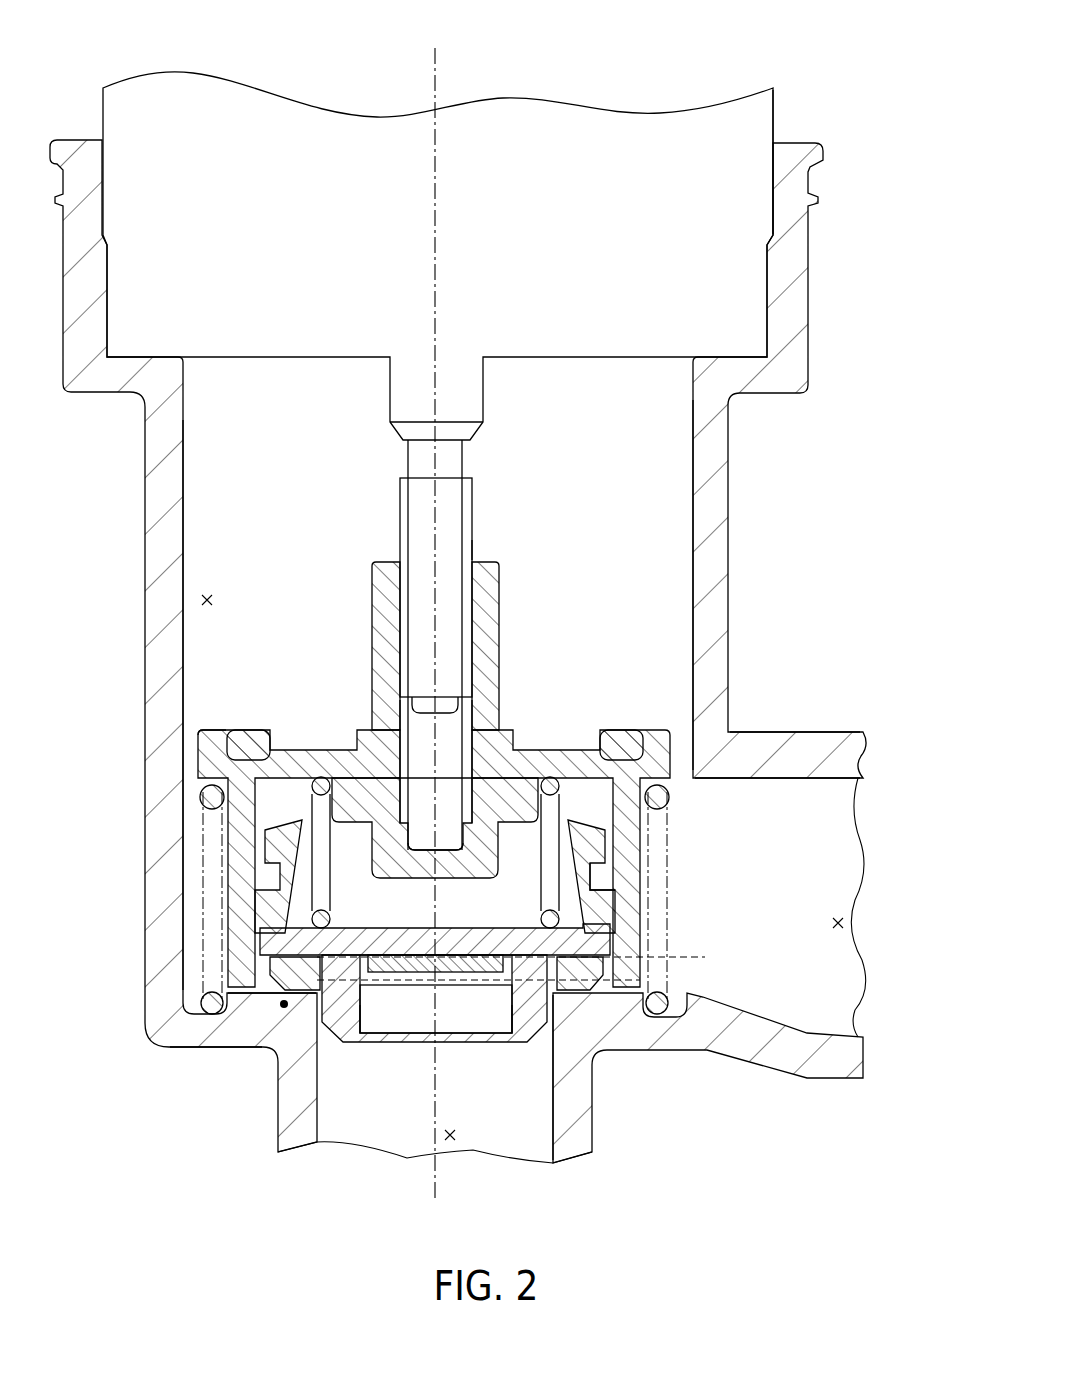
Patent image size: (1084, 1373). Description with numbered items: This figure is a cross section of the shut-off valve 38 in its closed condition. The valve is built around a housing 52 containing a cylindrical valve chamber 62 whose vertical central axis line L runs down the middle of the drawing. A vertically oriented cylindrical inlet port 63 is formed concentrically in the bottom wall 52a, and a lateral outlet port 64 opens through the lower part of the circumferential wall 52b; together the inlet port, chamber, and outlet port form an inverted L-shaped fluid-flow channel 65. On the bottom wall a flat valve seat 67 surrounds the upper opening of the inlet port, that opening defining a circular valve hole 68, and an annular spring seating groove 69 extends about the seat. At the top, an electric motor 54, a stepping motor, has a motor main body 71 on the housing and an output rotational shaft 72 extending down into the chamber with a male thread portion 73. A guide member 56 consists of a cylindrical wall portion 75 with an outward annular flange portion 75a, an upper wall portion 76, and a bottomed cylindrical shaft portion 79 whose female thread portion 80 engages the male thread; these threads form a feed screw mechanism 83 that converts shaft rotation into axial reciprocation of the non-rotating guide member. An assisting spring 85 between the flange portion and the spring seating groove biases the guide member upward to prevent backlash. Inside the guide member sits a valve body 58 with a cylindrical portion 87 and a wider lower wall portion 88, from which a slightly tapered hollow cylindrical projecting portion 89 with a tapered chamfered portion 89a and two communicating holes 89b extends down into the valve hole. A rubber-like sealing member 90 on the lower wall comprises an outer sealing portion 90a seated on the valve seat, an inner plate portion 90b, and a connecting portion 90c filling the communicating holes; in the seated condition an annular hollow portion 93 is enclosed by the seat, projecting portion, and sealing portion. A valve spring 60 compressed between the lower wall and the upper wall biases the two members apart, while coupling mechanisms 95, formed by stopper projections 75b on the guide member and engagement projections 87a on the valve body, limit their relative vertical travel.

The central axis line L is at (437, 607).
The shut-off valve 38 is at (857, 142).
The housing 52 is at (814, 319).
The bottom wall 52a is at (594, 1023).
The circumferential wall 52b is at (713, 548).
The electric motor 54 is at (779, 108).
The guide member 56 is at (313, 746).
The valve body 58 is at (264, 964).
The valve spring 60 is at (550, 778).
The valve chamber 62 is at (200, 600).
The inlet port 63 is at (450, 1140).
The outlet port 64 is at (838, 923).
The fluid-flow channel 65 is at (734, 793).
The valve seat 67 is at (283, 1005).
The valve hole 68 is at (320, 1023).
The spring seating groove 69 is at (192, 999).
The motor main body 71 is at (548, 130).
The output rotational shaft 72 is at (420, 458).
The male thread portion 73 is at (473, 500).
The cylindrical wall portion 75 is at (242, 843).
The annular flange portion 75a is at (200, 752).
The stopper projections 75b is at (604, 880).
The upper wall portion 76 is at (270, 758).
The cylindrical shaft portion 79 is at (487, 613).
The female thread portion 80 is at (402, 594).
The feed screw mechanism 83 is at (479, 553).
The assisting spring 85 is at (200, 795).
The cylindrical portion 87 is at (279, 918).
The engagement projections 87a is at (603, 848).
The lower wall portion 88 is at (440, 942).
The hollow cylindrical projecting portion 89 is at (523, 1003).
The tapered chamfered portion 89a is at (525, 1036).
The communicating holes 89b is at (378, 992).
The sealing member 90 is at (227, 1010).
The sealing portion 90a is at (263, 997).
The plate portion 90b is at (413, 967).
The connecting portion 90c is at (534, 961).
The hollow portion 93 is at (563, 992).
The coupling mechanisms 95 is at (595, 815).